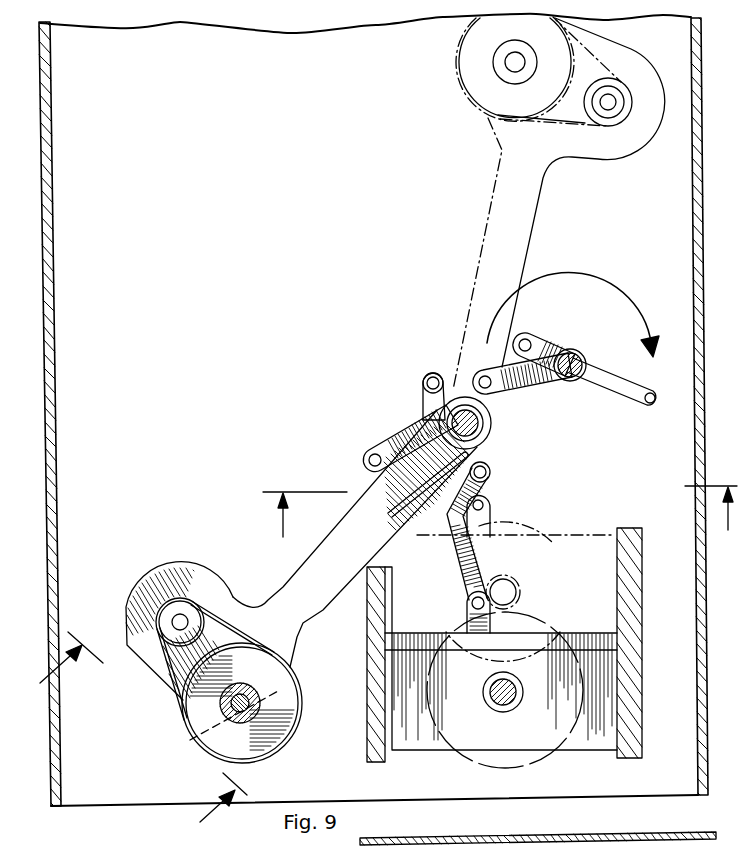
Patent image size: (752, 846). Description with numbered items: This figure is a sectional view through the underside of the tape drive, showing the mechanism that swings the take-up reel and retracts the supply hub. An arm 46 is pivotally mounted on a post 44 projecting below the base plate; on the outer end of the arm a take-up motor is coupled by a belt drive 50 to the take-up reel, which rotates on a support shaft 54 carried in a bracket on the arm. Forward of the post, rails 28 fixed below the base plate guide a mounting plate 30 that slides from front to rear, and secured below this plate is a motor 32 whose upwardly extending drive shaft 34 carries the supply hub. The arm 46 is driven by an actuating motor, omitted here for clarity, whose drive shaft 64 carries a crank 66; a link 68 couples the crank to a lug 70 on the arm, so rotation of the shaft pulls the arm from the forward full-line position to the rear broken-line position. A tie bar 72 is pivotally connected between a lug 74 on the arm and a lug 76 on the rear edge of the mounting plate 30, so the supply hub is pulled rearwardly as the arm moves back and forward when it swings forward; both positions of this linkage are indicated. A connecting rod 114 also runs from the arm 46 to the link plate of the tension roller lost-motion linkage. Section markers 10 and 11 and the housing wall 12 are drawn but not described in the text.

The section line 10- 10 is at (131, 739).
The section line 11- 11 is at (501, 524).
The housing wall 12 is at (707, 704).
The rails 28 is at (370, 600).
The mounting plate 30 is at (577, 532).
The motor 32 is at (533, 757).
The drive shaft 34 is at (507, 702).
The post 44 is at (493, 427).
The arm 46 is at (498, 163).
The belt drive 50 is at (167, 672).
The support shaft 54 is at (240, 722).
The drive shaft 64 is at (583, 385).
The crank 66 is at (627, 370).
The link 68 is at (395, 437).
The lug 70 is at (365, 460).
The tie bar 72 is at (423, 398).
The lug 74 is at (452, 377).
The lug 76 is at (490, 507).
The connecting rod 114 is at (390, 500).